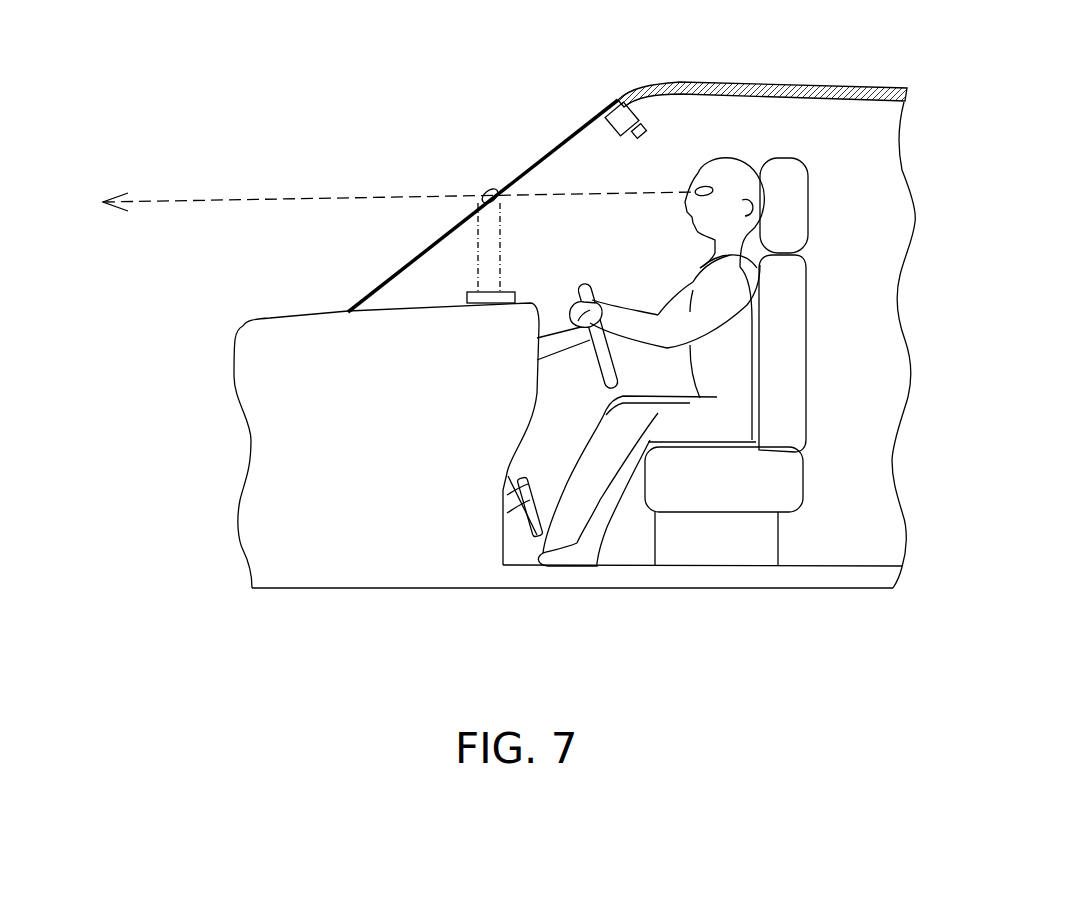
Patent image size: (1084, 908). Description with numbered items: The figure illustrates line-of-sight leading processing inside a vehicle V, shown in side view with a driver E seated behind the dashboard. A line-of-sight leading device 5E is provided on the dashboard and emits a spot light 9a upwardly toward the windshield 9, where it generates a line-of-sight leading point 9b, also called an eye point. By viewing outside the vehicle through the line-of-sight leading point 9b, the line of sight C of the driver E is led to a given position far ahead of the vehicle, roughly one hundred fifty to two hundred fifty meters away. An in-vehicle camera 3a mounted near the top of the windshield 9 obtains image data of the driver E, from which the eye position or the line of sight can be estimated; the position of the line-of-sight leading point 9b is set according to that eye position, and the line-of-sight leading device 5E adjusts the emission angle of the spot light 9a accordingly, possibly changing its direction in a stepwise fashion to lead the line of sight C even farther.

The vehicle V is at (657, 73).
The windshield 9 is at (548, 153).
The spot light 9a is at (504, 236).
The line-of-sight leading point 9b is at (487, 188).
The in-vehicle camera 3a is at (615, 132).
The line-of-sight leading device 5E is at (470, 292).
The driver E is at (722, 172).
The line of sight C is at (387, 204).